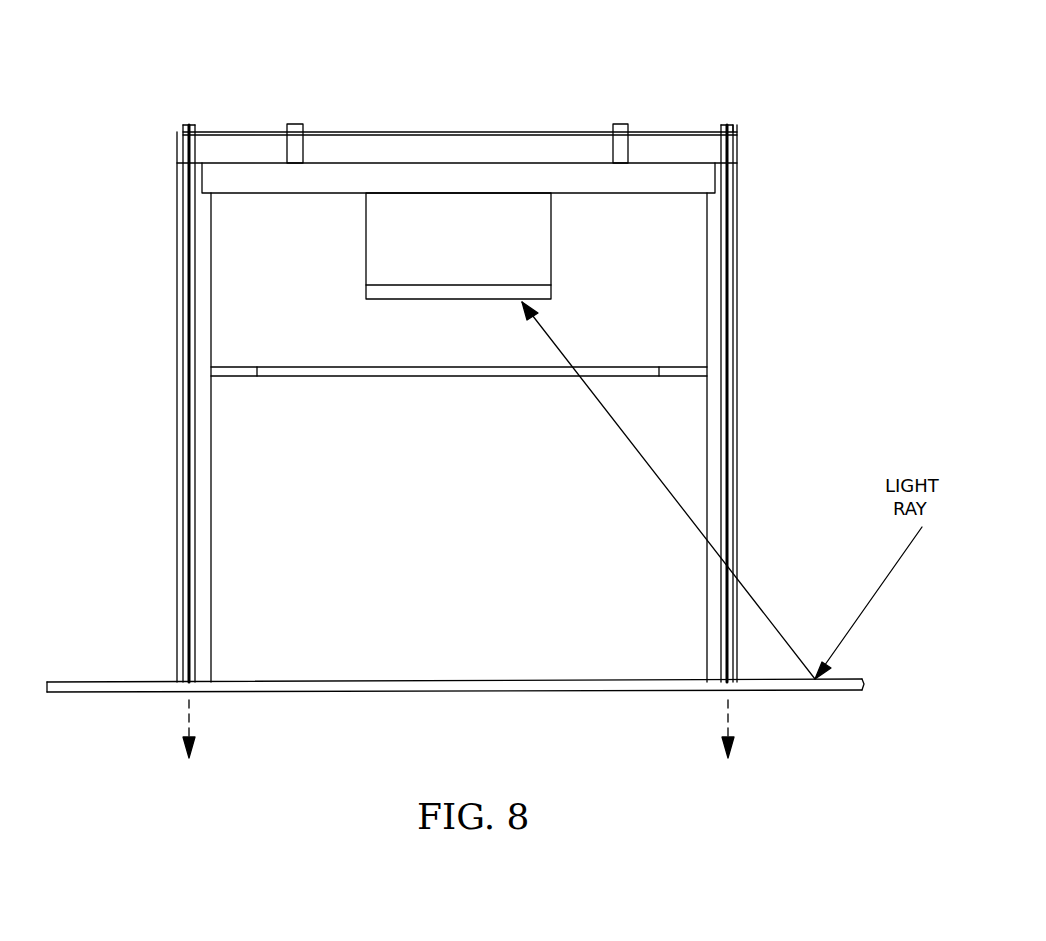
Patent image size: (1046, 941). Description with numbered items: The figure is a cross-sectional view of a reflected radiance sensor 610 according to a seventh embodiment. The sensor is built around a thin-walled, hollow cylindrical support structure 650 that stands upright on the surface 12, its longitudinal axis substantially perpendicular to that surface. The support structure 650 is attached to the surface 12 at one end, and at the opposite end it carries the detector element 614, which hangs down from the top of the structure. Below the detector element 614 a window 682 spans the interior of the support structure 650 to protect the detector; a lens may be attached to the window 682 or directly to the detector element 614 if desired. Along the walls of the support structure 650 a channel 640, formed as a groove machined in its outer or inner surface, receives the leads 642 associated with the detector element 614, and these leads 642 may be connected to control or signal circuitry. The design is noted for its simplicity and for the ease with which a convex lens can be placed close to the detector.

The reflected radiance sensor 610 is at (638, 53).
The surface 12 is at (115, 680).
The channel 640 is at (197, 582).
The leads 642 is at (257, 128).
The support structure 650 is at (742, 340).
The detector element 614 is at (396, 301).
The window 682 is at (369, 374).